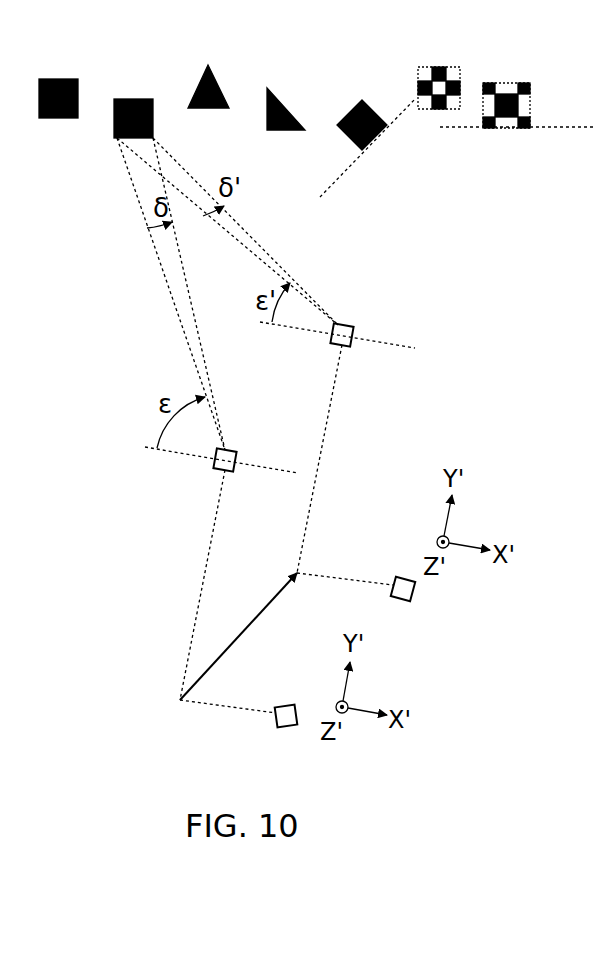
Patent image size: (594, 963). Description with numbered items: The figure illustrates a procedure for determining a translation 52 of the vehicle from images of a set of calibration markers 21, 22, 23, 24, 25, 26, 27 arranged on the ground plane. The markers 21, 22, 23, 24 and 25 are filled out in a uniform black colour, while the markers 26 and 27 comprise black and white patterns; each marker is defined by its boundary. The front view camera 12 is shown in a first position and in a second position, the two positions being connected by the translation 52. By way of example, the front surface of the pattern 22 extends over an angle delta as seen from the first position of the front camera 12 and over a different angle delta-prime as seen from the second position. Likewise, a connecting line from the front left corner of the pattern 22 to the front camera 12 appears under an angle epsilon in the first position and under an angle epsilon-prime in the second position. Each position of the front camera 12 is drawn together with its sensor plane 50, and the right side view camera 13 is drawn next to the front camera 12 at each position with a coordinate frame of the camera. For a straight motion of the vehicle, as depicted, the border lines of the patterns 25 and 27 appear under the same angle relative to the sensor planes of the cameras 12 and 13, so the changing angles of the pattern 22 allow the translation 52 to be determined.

The front view camera 12 is at (347, 327).
The right side view camera 13 is at (413, 592).
The calibration marker 21 is at (60, 78).
The calibration pattern 22 is at (135, 98).
The calibration marker 23 is at (217, 79).
The calibration marker 24 is at (295, 113).
The calibration pattern 25 is at (367, 102).
The calibration marker 26 is at (440, 65).
The calibration pattern 27 is at (507, 82).
The sensor plane 50 is at (382, 345).
The translation 52 is at (260, 613).